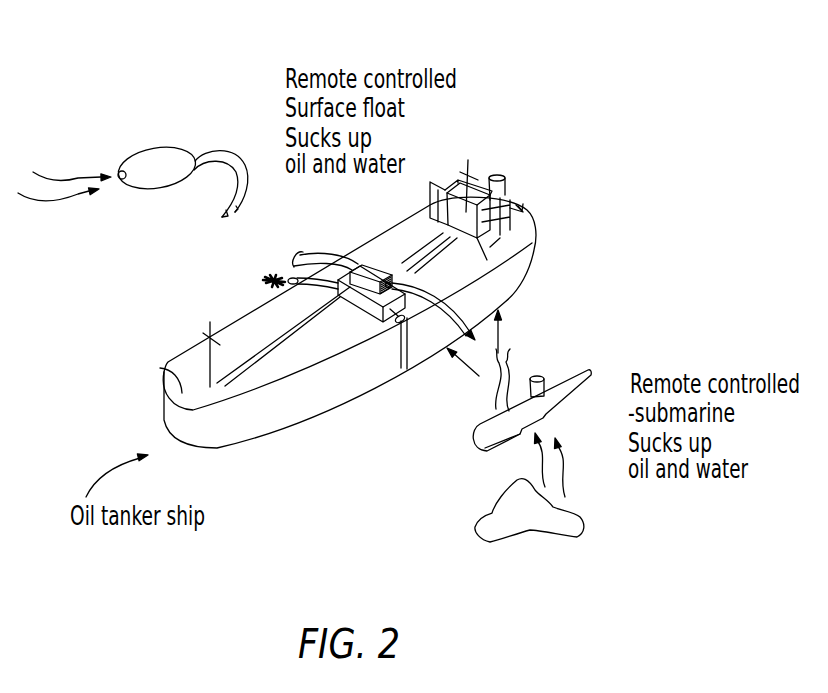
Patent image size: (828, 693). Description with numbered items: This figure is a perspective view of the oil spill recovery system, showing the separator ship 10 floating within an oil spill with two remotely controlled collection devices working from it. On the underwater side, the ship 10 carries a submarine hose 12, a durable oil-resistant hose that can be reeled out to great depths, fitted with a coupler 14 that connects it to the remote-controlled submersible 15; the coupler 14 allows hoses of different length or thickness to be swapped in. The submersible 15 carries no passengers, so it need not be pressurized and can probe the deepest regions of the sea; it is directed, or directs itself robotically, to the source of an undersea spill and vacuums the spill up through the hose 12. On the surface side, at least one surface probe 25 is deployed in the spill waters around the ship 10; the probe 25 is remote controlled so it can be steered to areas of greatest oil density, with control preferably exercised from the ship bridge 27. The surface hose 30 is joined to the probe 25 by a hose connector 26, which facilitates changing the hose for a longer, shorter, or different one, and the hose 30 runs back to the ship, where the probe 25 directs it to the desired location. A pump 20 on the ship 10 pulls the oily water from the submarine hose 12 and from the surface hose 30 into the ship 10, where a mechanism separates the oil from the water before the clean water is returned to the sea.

The separator ship 10 is at (161, 368).
The submarine hose 12 is at (502, 356).
The coupler 14 is at (493, 412).
The remote-controlled submersible 15 is at (499, 436).
The pump 20 is at (378, 308).
The surface probe 25 is at (147, 150).
The float hose 26 is at (193, 152).
The ship bridge 27 is at (470, 193).
The surface hose 30 is at (232, 192).